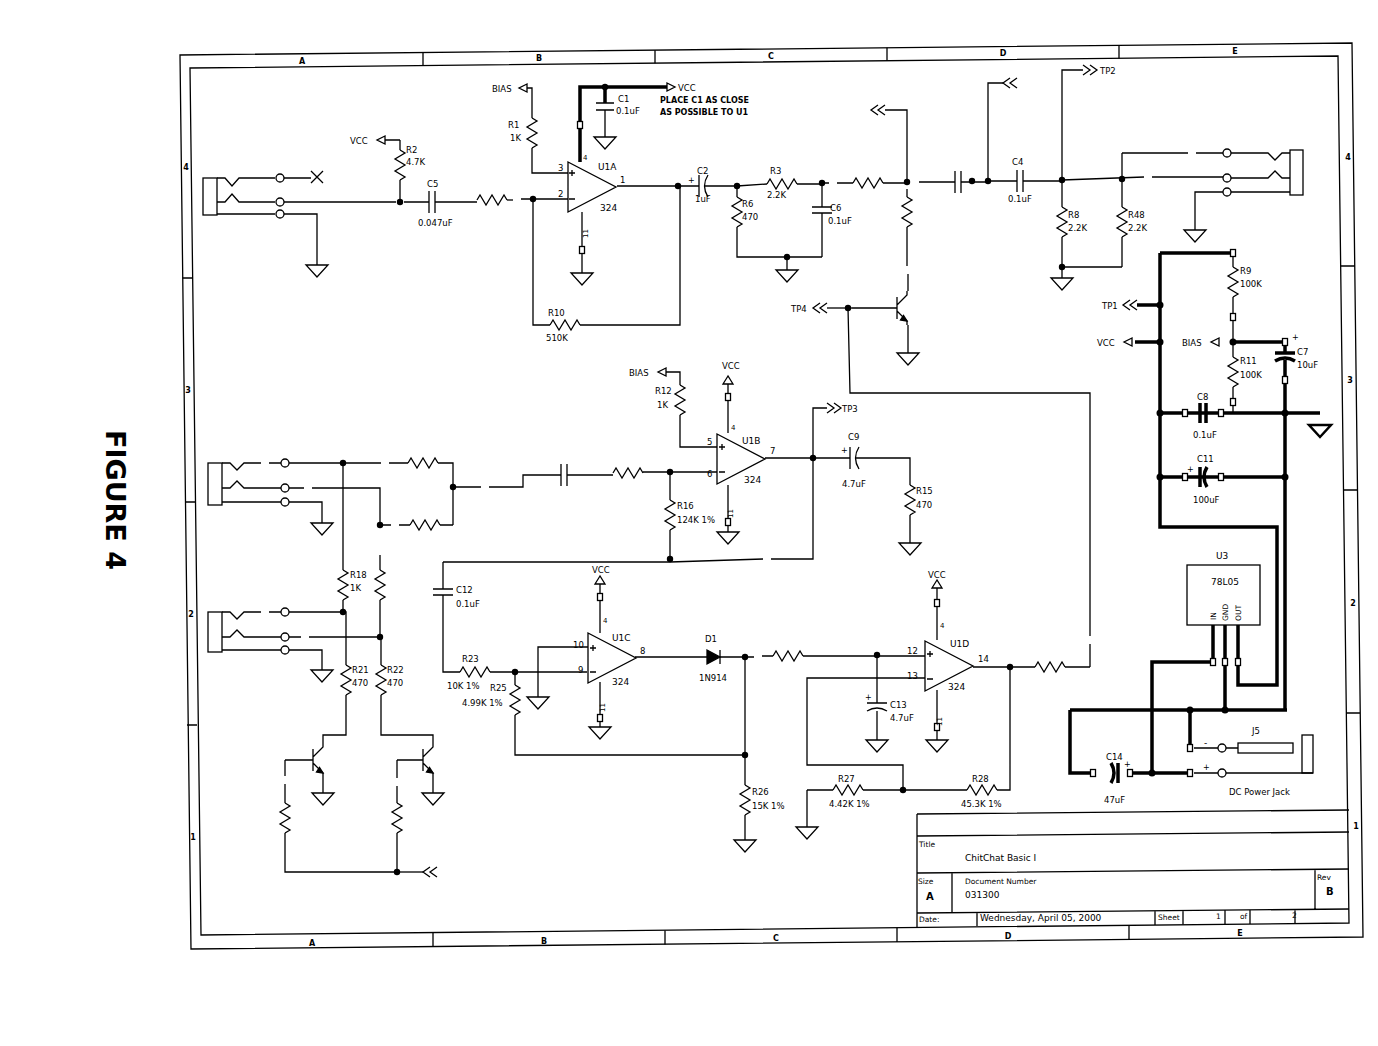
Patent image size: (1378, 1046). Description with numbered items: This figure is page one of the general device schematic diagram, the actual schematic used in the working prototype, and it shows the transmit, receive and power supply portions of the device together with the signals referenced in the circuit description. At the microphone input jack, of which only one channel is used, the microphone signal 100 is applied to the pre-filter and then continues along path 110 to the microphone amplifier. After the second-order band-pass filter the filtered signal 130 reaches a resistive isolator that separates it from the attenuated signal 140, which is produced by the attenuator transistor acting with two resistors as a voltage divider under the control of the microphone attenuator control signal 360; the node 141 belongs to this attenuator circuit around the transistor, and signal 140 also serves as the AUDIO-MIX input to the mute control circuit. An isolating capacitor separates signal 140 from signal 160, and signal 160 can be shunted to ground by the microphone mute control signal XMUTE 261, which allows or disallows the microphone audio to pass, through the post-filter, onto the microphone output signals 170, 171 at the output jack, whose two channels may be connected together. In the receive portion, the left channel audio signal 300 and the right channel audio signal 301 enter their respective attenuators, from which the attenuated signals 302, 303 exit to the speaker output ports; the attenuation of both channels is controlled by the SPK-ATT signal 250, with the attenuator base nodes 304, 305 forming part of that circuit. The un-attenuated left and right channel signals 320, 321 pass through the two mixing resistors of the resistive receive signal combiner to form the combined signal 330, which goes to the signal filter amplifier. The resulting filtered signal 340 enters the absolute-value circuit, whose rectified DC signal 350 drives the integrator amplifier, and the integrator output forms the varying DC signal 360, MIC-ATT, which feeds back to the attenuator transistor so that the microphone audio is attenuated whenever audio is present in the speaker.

The microphone signal 100 is at (364, 206).
The signal path to Microphone Amplifier 110 is at (513, 204).
The filtered signal 130 is at (835, 179).
The attenuated signal (AUDIO-MIX) 140 is at (917, 178).
The microphone attenuator node 141 is at (912, 268).
The isolated signal 160 is at (974, 185).
The microphone output signal 170 is at (1151, 174).
The microphone output signal 171 is at (1195, 150).
The microphone mute control signal XMUTE 261 is at (1017, 131).
The SPK-ATT signal 250 is at (459, 870).
The left channel audio signal 300 is at (267, 459).
The right channel audio signal 301 is at (310, 484).
The attenuated left channel signal 302 is at (267, 608).
The attenuated right channel signal 303 is at (307, 633).
The attenuation transistor Q2 base node 304 is at (281, 781).
The attenuation transistor Q3 base node 305 is at (395, 786).
The un-attenuated left channel signal 320 is at (387, 459).
The un-attenuated right channel signal 321 is at (397, 529).
The combined signal 330 is at (487, 483).
The filtered signal 340 is at (769, 563).
The rectified DC signal 350 is at (760, 651).
The microphone attenuator control signal MIC-ATT 360 is at (1094, 638).